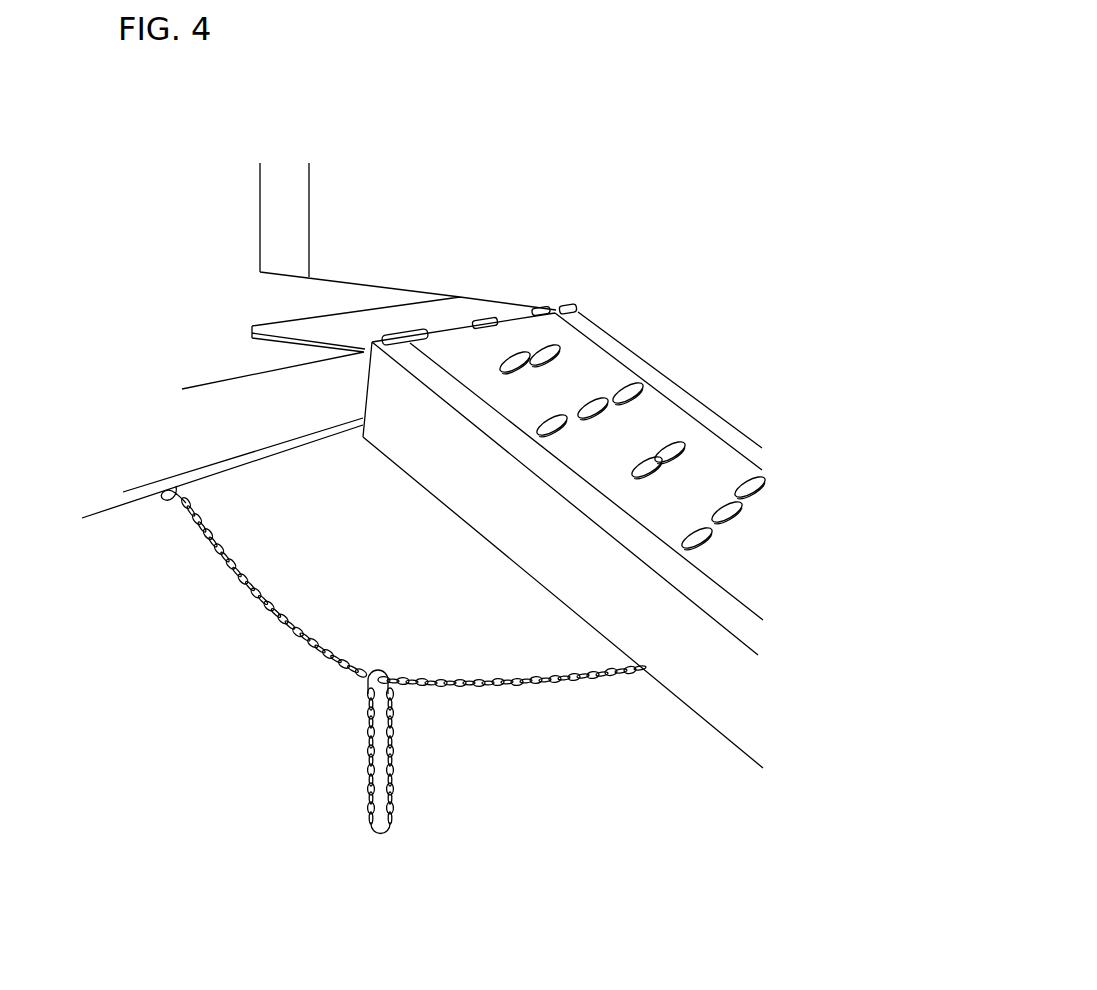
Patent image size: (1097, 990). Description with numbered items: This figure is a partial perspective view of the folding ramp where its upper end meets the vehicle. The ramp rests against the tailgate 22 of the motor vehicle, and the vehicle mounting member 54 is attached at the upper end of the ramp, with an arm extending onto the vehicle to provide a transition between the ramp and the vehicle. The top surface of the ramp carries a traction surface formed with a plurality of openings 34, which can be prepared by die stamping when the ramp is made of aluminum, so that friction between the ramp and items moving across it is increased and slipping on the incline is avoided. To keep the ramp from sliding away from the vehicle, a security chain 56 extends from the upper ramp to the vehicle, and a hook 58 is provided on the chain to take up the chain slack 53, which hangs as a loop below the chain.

The tailgate 22 is at (332, 297).
The vehicle mounting member 54 is at (470, 307).
The openings 34 is at (613, 383).
The security chain 56 is at (501, 686).
The hook 58 is at (370, 667).
The chain slack 53 is at (395, 832).